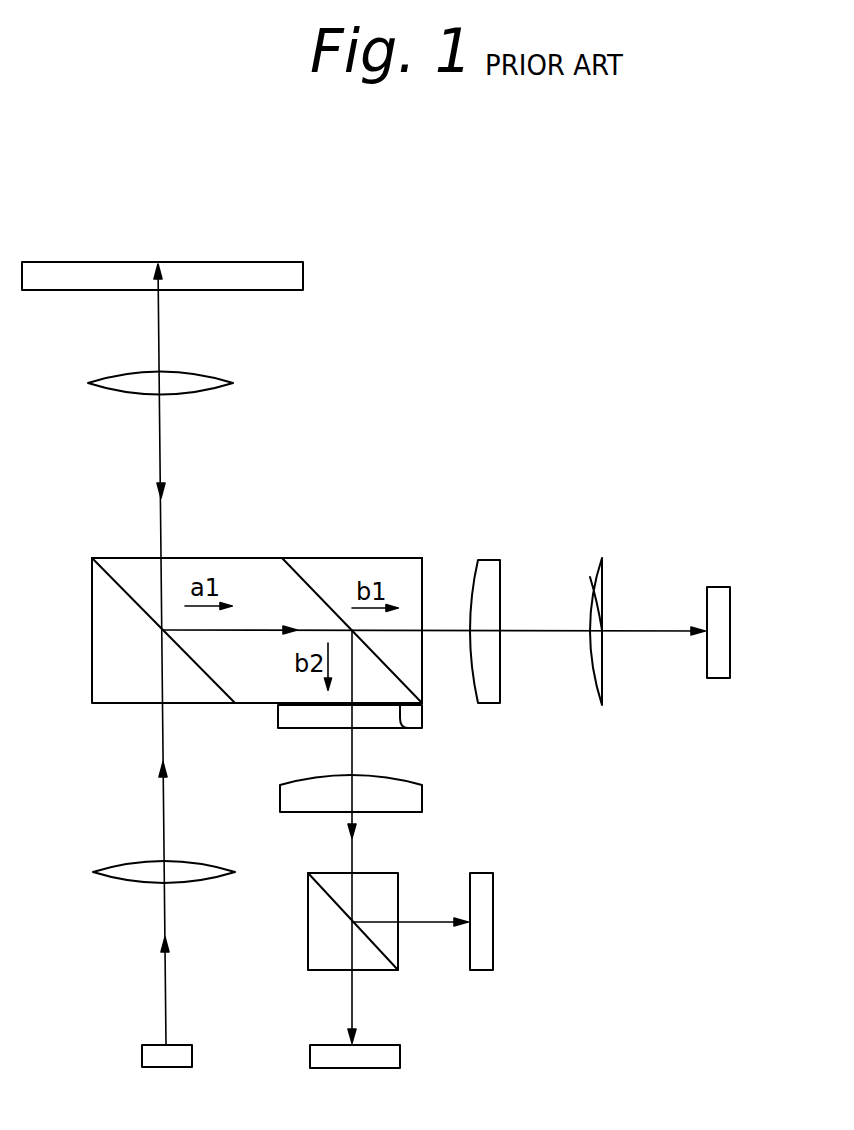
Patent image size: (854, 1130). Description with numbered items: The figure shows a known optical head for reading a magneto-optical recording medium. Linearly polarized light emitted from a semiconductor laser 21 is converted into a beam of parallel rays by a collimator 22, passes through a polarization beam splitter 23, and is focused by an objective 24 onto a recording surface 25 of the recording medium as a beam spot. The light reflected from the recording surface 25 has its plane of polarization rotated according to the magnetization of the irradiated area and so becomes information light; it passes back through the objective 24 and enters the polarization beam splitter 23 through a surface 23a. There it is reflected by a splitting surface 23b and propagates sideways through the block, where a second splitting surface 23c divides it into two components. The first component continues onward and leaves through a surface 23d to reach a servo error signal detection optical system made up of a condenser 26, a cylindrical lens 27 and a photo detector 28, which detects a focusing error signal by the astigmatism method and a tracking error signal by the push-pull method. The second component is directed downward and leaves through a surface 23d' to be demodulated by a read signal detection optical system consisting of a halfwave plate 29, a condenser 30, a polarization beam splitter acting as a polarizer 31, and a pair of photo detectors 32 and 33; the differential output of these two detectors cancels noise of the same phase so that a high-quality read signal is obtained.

The semiconductor laser 21 is at (143, 1055).
The collimator 22 is at (120, 868).
The polarization beam splitter 23 is at (90, 632).
The surface 23a is at (190, 557).
The splitting surface 23b is at (120, 582).
The splitting surface 23c is at (300, 576).
The surface 23d is at (424, 601).
The surface 23d' is at (449, 734).
The objective 24 is at (118, 378).
The recording surface 25 is at (108, 262).
The condenser 26 is at (488, 565).
The cylindrical lens 27 is at (586, 578).
The photo detector 28 is at (715, 590).
The halfwave plate 29 is at (278, 710).
The condenser 30 is at (284, 790).
The polarization beam splitter (polarizer) 31 is at (304, 925).
The photo detector 32 is at (312, 1052).
The photo detector 33 is at (481, 972).